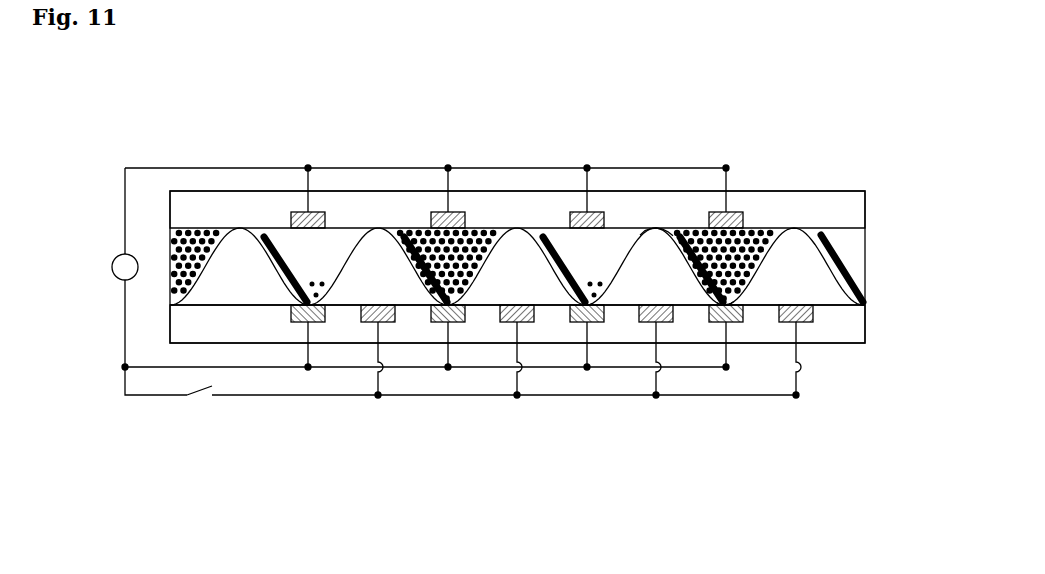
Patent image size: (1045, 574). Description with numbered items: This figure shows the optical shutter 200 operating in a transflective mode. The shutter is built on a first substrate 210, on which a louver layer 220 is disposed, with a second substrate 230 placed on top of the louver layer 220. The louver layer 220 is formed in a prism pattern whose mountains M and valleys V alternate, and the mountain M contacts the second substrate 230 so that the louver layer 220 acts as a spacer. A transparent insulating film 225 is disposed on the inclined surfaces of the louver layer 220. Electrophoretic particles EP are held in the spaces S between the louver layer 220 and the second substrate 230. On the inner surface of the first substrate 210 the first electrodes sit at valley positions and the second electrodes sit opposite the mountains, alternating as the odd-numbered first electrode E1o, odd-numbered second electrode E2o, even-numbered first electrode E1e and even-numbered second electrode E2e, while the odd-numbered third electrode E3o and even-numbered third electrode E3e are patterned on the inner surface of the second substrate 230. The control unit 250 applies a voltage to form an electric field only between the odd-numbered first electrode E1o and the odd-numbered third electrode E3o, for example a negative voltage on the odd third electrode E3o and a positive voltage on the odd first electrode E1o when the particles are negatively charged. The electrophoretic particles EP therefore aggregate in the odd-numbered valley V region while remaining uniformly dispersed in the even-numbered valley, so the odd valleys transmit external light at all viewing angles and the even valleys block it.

The optical shutter 200 is at (98, 113).
The control unit 250 is at (112, 267).
The second substrate 230 is at (840, 202).
The space S is at (848, 236).
The louver layer 220 is at (808, 255).
The electrophoretic particles EP is at (865, 290).
The first substrate 210 is at (840, 326).
The odd-numbered electrode of the third electrode E3o is at (321, 212).
The even-numbered electrode of the third electrode E3e is at (462, 212).
The mountain M is at (658, 228).
The valley V is at (738, 310).
The odd-numbered electrode of the first electrode E1o is at (296, 323).
The odd-numbered electrode of the second electrode E2o is at (366, 323).
The even-numbered electrode of the first electrode E1e is at (436, 323).
The even-numbered electrode of the second electrode E2e is at (505, 323).
The insulating film 225 is at (560, 268).